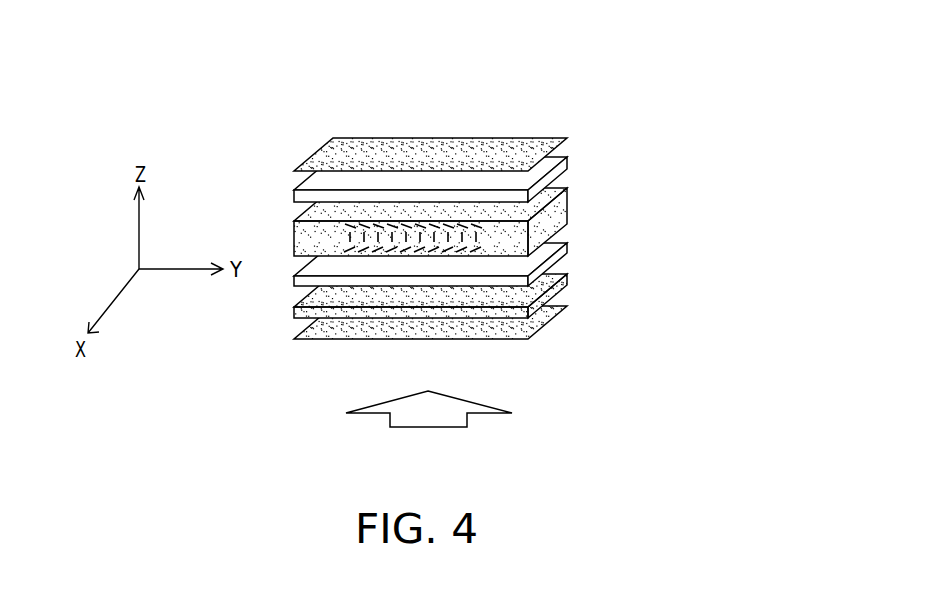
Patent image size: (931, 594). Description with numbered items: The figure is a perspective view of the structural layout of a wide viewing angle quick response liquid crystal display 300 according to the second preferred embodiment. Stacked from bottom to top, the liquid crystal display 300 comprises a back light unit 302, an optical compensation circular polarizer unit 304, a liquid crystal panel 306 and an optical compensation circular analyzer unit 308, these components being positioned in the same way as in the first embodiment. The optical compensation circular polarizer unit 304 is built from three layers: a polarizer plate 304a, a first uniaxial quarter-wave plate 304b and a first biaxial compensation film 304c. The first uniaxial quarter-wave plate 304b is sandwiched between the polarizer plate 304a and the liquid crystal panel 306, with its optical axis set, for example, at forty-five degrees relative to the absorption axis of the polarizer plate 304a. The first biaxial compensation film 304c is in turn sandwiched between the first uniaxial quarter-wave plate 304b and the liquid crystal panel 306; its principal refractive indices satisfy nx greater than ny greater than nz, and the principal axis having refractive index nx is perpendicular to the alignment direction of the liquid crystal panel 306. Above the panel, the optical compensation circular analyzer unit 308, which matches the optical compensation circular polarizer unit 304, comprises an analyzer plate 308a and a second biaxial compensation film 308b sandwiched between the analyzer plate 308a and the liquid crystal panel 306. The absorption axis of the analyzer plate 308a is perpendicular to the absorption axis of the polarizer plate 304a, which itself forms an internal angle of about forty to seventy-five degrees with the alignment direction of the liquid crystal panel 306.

The wide viewing angle quick response liquid crystal display 300 is at (527, 288).
The back light unit 302 is at (462, 419).
The optical compensation circular polarizer unit 304 is at (526, 300).
The polarizer plate 304a is at (540, 327).
The first uniaxial quarter-wave plate 304b is at (563, 288).
The first biaxial compensation film 304c is at (562, 258).
The liquid crystal panel 306 is at (558, 215).
The optical compensation circular analyzer unit 308 is at (527, 158).
The analyzer plate 308a is at (533, 140).
The second biaxial compensation film 308b is at (563, 168).